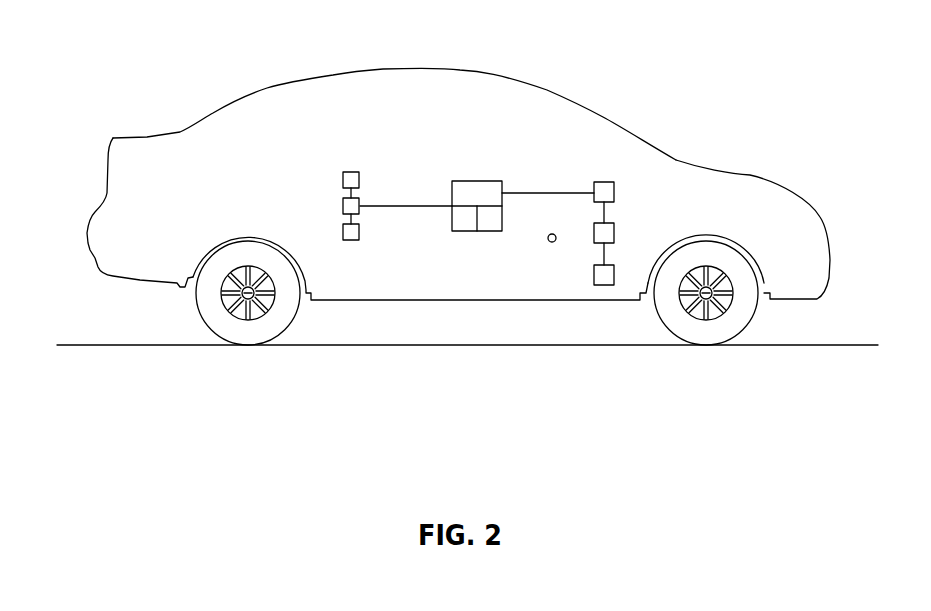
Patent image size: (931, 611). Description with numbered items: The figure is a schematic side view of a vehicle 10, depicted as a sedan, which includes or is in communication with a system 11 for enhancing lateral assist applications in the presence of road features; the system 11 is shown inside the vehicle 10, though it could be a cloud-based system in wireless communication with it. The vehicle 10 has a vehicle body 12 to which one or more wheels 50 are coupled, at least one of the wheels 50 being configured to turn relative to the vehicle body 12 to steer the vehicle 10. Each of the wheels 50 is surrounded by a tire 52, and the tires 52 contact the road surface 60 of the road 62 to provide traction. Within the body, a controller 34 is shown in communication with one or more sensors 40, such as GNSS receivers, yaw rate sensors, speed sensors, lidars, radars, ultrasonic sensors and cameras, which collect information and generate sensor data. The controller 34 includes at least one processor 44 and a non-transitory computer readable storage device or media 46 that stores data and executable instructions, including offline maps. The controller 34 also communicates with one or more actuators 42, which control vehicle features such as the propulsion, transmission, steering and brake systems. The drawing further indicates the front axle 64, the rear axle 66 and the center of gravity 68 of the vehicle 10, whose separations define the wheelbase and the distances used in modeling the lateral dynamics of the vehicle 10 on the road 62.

The vehicle 10 is at (458, 184).
The system 11 is at (454, 170).
The vehicle body 12 is at (750, 205).
The controller 34 is at (491, 181).
The sensors 40 is at (614, 275).
The actuators 42 is at (343, 232).
The processor 44 is at (463, 218).
The non-transitory computer readable storage device or media 46 is at (490, 218).
The wheels 50 is at (248, 293).
The tire 52 is at (298, 310).
The road surface 60 is at (65, 336).
The road 62 is at (855, 345).
The front axle 64 is at (705, 293).
The rear axle 66 is at (248, 293).
The center of gravity 68 is at (552, 242).